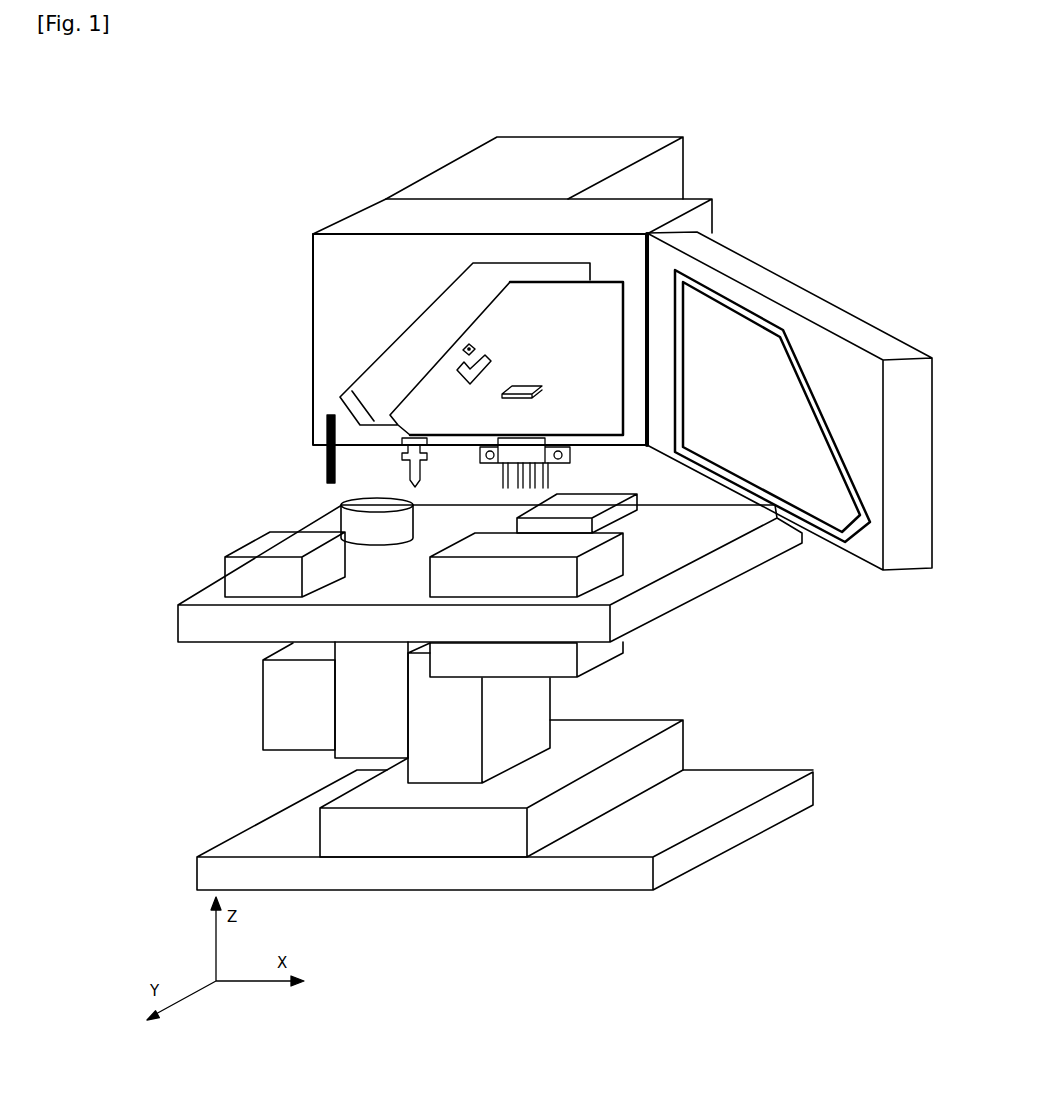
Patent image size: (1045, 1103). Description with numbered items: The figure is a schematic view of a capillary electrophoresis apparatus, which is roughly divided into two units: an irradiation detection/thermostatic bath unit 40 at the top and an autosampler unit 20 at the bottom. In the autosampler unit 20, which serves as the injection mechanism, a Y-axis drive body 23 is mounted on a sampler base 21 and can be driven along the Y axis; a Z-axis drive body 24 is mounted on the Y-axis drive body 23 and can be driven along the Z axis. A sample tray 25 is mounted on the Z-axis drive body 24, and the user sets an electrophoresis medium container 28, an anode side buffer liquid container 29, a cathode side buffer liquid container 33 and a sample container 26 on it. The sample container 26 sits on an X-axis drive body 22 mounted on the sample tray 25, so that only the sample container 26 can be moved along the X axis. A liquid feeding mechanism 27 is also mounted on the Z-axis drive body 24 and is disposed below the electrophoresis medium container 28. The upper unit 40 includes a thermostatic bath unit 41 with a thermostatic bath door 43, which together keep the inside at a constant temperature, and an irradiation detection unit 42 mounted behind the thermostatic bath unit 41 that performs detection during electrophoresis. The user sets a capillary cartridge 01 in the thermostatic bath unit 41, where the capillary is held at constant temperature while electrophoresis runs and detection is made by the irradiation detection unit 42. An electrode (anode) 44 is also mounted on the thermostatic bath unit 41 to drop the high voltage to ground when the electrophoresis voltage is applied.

The capillary cartridge 01 is at (590, 333).
The autosampler unit 20 is at (137, 490).
The sampler base 21 is at (657, 832).
The X-axis drive body 22 is at (608, 655).
The Y-axis drive body 23 is at (443, 735).
The Z-axis drive body 24 is at (363, 742).
The sample tray 25 is at (218, 632).
The sample container 26 is at (600, 567).
The liquid feeding mechanism 27 is at (275, 688).
The electrophoresis medium container 28 is at (345, 517).
The anode side buffer liquid container 29 is at (247, 575).
The cathode side buffer liquid container 33 is at (630, 520).
The irradiation detection/thermostatic bath unit 40 is at (137, 72).
The thermostatic bath unit 41 is at (375, 215).
The irradiation detection unit 42 is at (483, 160).
The thermostatic bath door 43 is at (782, 292).
The electrode (anode) 44 is at (325, 418).